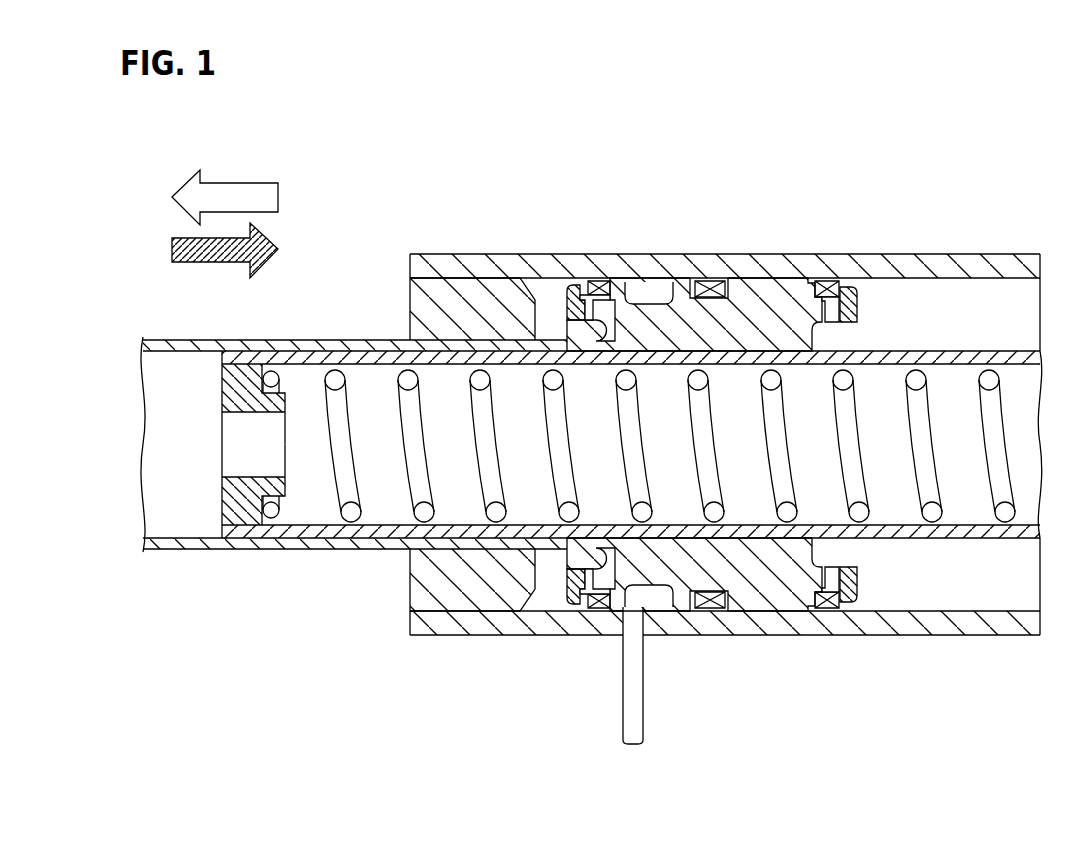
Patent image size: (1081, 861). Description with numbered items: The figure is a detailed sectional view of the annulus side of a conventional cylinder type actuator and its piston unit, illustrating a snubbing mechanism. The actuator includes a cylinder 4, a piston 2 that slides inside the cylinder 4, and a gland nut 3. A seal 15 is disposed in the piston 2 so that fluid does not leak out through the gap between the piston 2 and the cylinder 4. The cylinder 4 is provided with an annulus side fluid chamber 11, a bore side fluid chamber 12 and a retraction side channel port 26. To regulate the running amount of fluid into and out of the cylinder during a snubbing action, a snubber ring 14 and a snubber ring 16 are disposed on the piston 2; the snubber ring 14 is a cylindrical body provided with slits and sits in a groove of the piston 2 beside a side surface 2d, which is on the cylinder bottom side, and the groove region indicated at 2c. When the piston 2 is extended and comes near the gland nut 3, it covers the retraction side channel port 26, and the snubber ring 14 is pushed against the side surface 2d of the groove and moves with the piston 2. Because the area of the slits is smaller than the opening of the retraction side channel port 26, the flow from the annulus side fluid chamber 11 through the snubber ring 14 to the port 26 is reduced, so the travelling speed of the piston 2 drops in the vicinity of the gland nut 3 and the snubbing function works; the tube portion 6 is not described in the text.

The piston 2 is at (686, 286).
The seal member of piston 2c is at (598, 607).
The side surface of a groove of the piston 2d is at (610, 608).
The gland nut 3 is at (410, 312).
The cylinder 4 is at (783, 268).
The spring housing tube 6 is at (920, 356).
The annulus side fluid chamber 11 is at (545, 595).
The bore side fluid chamber 12 is at (935, 590).
The snubber ring 14 is at (605, 605).
The seal 15 is at (708, 608).
The snubber ring 16 is at (825, 608).
The retraction side channel port 26 is at (635, 723).